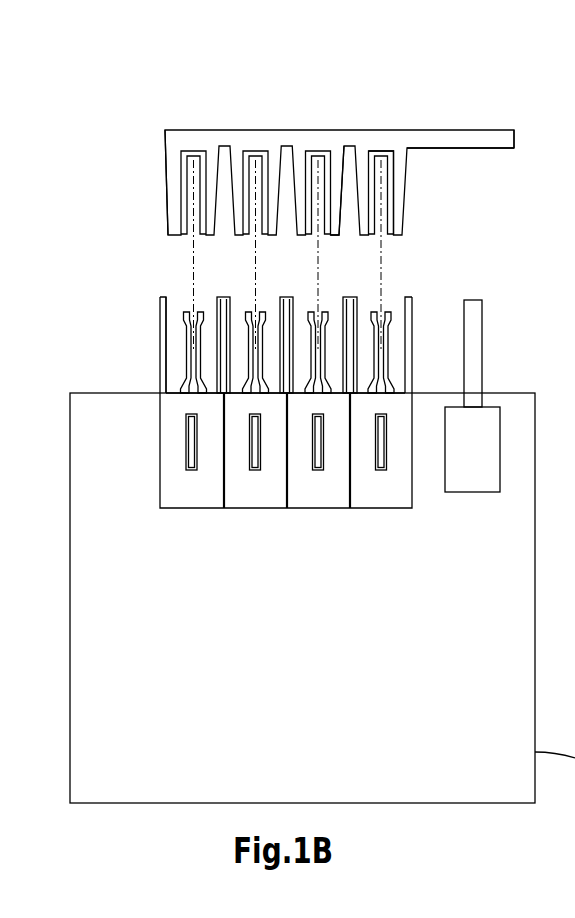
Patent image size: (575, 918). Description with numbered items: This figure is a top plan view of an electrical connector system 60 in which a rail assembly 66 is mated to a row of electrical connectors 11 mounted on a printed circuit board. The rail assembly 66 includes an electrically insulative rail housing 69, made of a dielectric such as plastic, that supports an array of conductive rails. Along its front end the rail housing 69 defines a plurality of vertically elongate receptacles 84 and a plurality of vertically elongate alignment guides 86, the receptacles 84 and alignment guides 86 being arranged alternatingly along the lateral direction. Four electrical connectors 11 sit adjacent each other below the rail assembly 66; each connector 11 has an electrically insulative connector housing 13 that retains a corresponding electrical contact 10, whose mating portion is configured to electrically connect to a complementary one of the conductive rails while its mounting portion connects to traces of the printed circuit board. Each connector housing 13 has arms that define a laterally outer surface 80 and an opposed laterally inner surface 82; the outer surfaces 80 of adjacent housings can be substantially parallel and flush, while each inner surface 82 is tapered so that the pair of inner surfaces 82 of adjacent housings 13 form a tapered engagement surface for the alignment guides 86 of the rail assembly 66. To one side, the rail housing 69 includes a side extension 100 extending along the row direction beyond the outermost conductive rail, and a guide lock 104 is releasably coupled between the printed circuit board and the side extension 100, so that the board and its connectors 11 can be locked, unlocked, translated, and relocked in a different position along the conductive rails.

The electrical contact 10 is at (183, 327).
The electrical connector 11 is at (378, 508).
The connector housing 13 is at (247, 489).
The electrical connector system 60 is at (120, 260).
The rail assembly 66 is at (211, 107).
The rail housing 69 is at (361, 125).
The laterally outer surface 80 is at (158, 313).
The laterally inner surface 82 is at (168, 303).
The receptacle 84 is at (383, 236).
The alignment guide 86 is at (349, 236).
The side extension 100 is at (499, 125).
The guide lock 104 is at (475, 444).